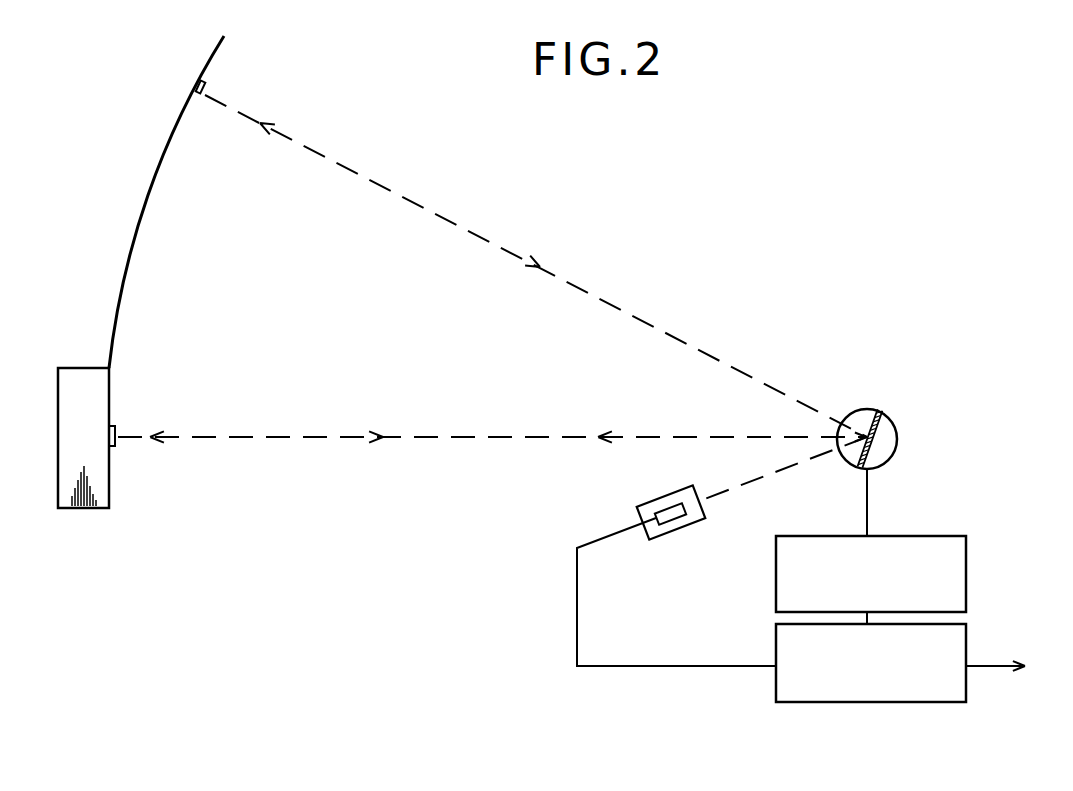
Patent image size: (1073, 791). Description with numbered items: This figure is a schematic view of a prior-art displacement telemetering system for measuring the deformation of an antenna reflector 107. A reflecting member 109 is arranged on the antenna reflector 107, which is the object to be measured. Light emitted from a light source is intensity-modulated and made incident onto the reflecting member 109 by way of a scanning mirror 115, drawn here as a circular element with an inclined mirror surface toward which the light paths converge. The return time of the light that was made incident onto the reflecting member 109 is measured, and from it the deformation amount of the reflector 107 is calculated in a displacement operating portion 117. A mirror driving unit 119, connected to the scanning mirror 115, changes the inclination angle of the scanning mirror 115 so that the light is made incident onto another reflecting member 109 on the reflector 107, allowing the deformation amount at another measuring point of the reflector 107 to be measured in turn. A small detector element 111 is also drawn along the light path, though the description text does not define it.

The antenna reflector 107 is at (146, 207).
The reflecting member 109 is at (204, 87).
The light detector 111 is at (672, 527).
The scanning mirror 115 is at (872, 424).
The displacement operating portion 117 is at (942, 703).
The mirror driving unit 119 is at (966, 597).